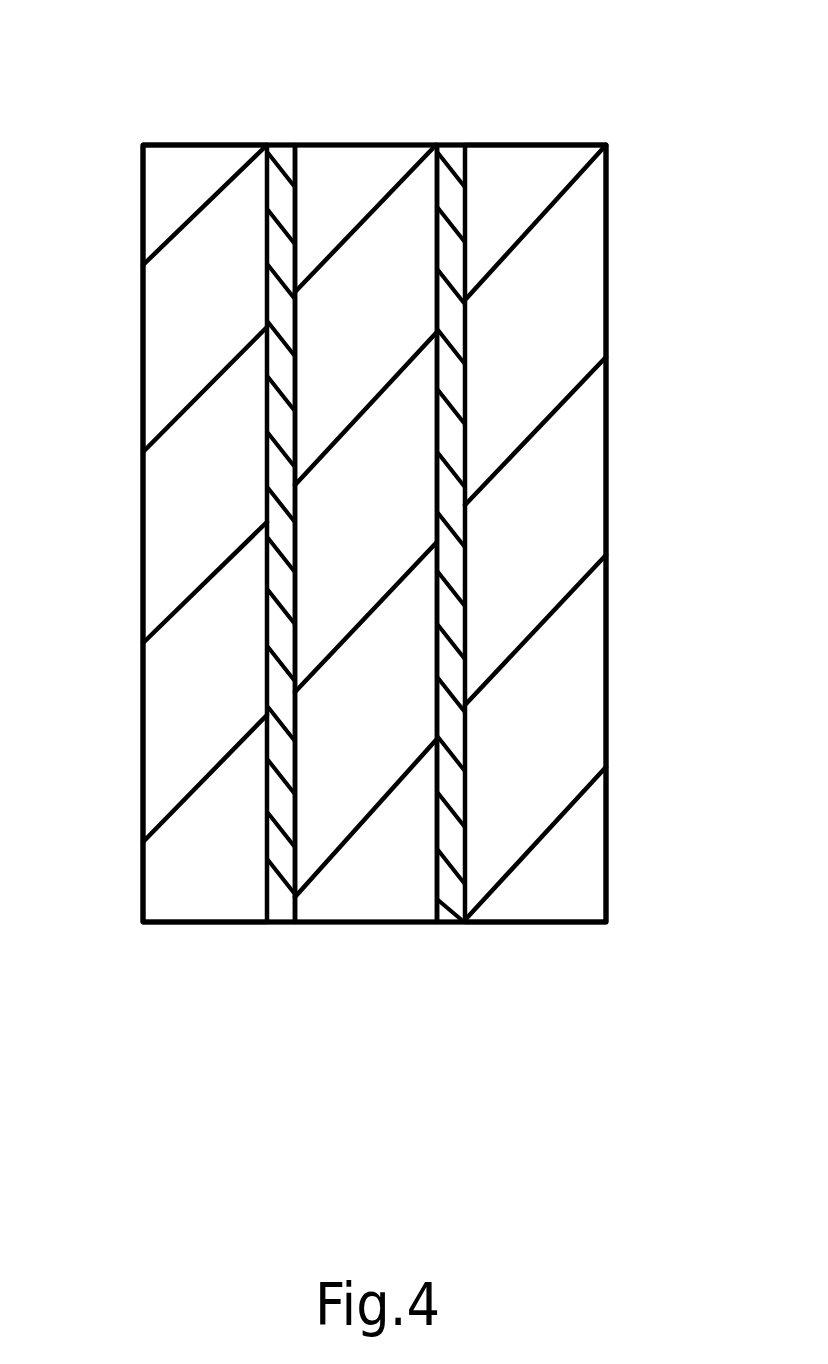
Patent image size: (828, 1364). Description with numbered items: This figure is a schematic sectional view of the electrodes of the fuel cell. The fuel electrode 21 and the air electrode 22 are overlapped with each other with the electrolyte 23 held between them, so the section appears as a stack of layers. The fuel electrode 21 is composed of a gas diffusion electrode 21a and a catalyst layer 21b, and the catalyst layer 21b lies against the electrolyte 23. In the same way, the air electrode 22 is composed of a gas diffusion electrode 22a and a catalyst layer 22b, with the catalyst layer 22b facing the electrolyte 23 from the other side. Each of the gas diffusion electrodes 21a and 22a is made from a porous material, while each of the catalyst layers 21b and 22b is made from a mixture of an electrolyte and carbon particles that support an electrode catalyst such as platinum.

The fuel electrode 21 is at (295, 130).
The gas diffusion electrode 21a is at (220, 882).
The catalyst layer 21b is at (282, 903).
The air electrode 22 is at (604, 125).
The gas diffusion electrode 22a is at (548, 872).
The catalyst layer 22b is at (452, 897).
The electrolyte 23 is at (340, 212).